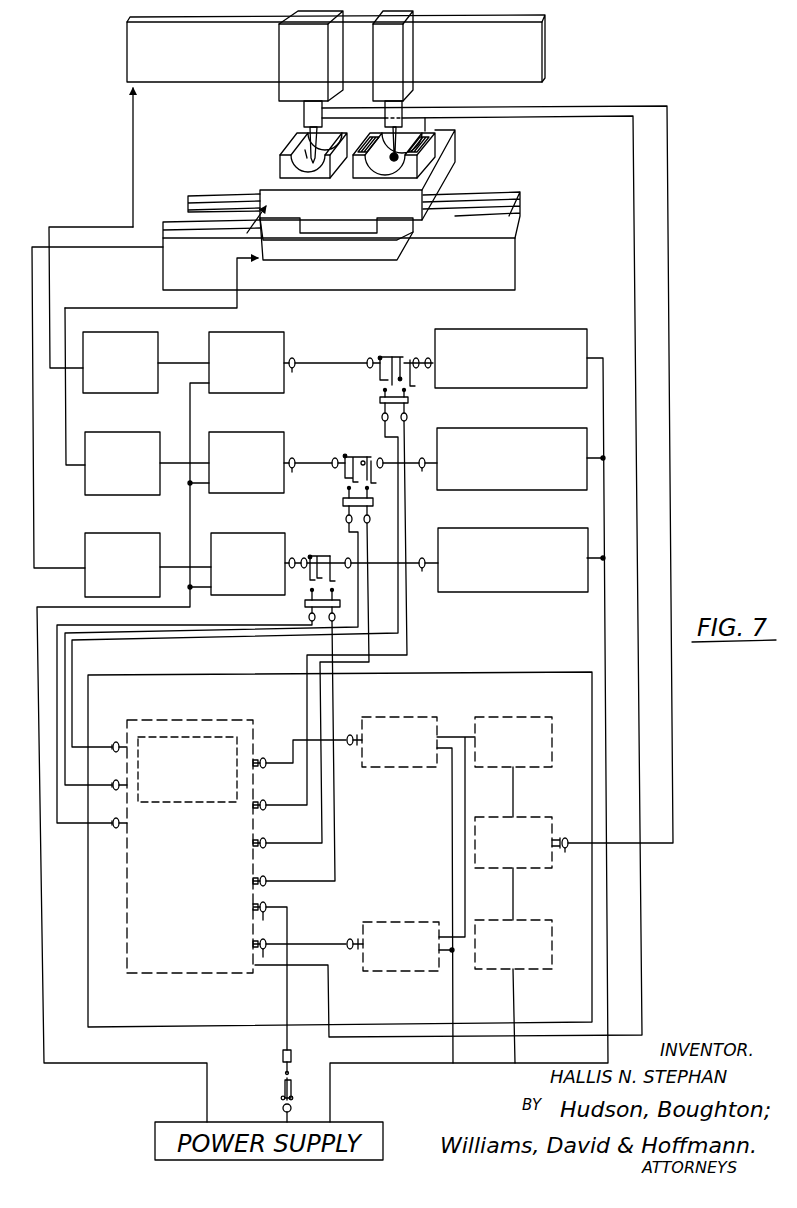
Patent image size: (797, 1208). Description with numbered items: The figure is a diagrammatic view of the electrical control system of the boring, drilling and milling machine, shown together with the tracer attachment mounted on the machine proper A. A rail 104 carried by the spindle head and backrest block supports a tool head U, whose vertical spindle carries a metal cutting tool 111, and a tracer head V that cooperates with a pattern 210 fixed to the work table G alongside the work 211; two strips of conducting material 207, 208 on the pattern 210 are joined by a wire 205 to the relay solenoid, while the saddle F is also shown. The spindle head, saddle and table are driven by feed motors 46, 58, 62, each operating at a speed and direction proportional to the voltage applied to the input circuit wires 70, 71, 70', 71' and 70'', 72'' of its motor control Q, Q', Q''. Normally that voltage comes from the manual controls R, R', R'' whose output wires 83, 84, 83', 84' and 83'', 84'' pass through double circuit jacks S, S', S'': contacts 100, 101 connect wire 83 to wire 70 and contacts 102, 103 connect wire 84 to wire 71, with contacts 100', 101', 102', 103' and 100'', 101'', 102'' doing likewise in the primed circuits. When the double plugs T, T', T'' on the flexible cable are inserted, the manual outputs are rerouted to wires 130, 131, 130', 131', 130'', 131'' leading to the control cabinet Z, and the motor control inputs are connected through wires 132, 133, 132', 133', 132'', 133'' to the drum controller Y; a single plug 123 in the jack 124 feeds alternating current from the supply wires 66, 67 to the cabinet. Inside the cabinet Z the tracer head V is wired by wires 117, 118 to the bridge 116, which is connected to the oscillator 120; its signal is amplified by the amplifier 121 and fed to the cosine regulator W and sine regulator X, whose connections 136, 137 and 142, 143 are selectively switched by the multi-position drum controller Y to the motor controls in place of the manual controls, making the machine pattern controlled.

The rail 104 is at (542, 31).
The tool head U is at (279, 50).
The tracer head V is at (403, 45).
The metal cutting tool 111 is at (305, 148).
The work 211 is at (281, 166).
The strip of conducting material 207 is at (367, 134).
The strip of conducting material 208 is at (430, 128).
The table G is at (450, 150).
The pattern 210 is at (362, 172).
The machine base A is at (506, 248).
The saddle F is at (384, 262).
The spindle head feed motor 46 is at (98, 395).
The saddle feed motor 58 is at (102, 497).
The table feed motor 62 is at (118, 531).
The motor control mechanism Q is at (246, 353).
The motor control mechanism Q' is at (246, 453).
The motor control mechanism Q'' is at (248, 554).
The manual control R is at (511, 349).
The manual control R' is at (512, 449).
The manual control R'' is at (513, 550).
The wire 70 is at (325, 355).
The wire 71 is at (300, 377).
The wire 70' is at (308, 455).
The wire 71' is at (302, 477).
The wire 70'' is at (299, 555).
The terminal 72'' is at (304, 572).
The contact 100 is at (354, 354).
The contact 101 is at (357, 370).
The contact 102 is at (419, 381).
The contact 103 is at (387, 355).
The contact 100' is at (336, 451).
The contact 101' is at (341, 468).
The contact 102' is at (388, 474).
The contact 103' is at (390, 459).
The contact 100'' is at (368, 554).
The contact 101'' is at (309, 573).
The contact 102'' is at (352, 572).
The wire 83 is at (420, 354).
The wire 84 is at (424, 373).
The wire 83' is at (425, 454).
The wire 84' is at (425, 477).
The wire 83'' is at (426, 554).
The wire 84'' is at (426, 578).
The double circuit jack S is at (355, 384).
The double plug T is at (372, 401).
The double circuit jack S' is at (329, 482).
The double plug T' is at (335, 500).
The double circuit jack S'' is at (279, 603).
The double plug T'' is at (308, 610).
The wire 130 is at (348, 606).
The wire 131 is at (352, 622).
The wire 132 is at (235, 584).
The wire 133 is at (240, 583).
The wire 130' is at (328, 677).
The wire 131' is at (333, 691).
The wire 132' is at (211, 654).
The wire 133' is at (222, 654).
The wire 130'' is at (294, 746).
The wire 131'' is at (299, 759).
The wire 132'' is at (184, 722).
The wire 133'' is at (205, 724).
The control cabinet Z is at (88, 898).
The drum controller Y is at (177, 723).
The cosine regulator W is at (406, 771).
The sine regulator X is at (408, 919).
The terminal 136 is at (263, 759).
The terminal 137 is at (261, 768).
The wire 66 is at (252, 904).
The wire 67 is at (258, 914).
The terminal 142 is at (263, 940).
The terminal 143 is at (259, 955).
The amplifier 121 is at (552, 736).
The bridge 116 is at (547, 818).
The wire 117 is at (559, 838).
The wire 118 is at (558, 856).
The oscillator 120 is at (552, 920).
The wire 205 is at (642, 959).
The single plug 123 is at (282, 1056).
The jack 124 is at (283, 1090).